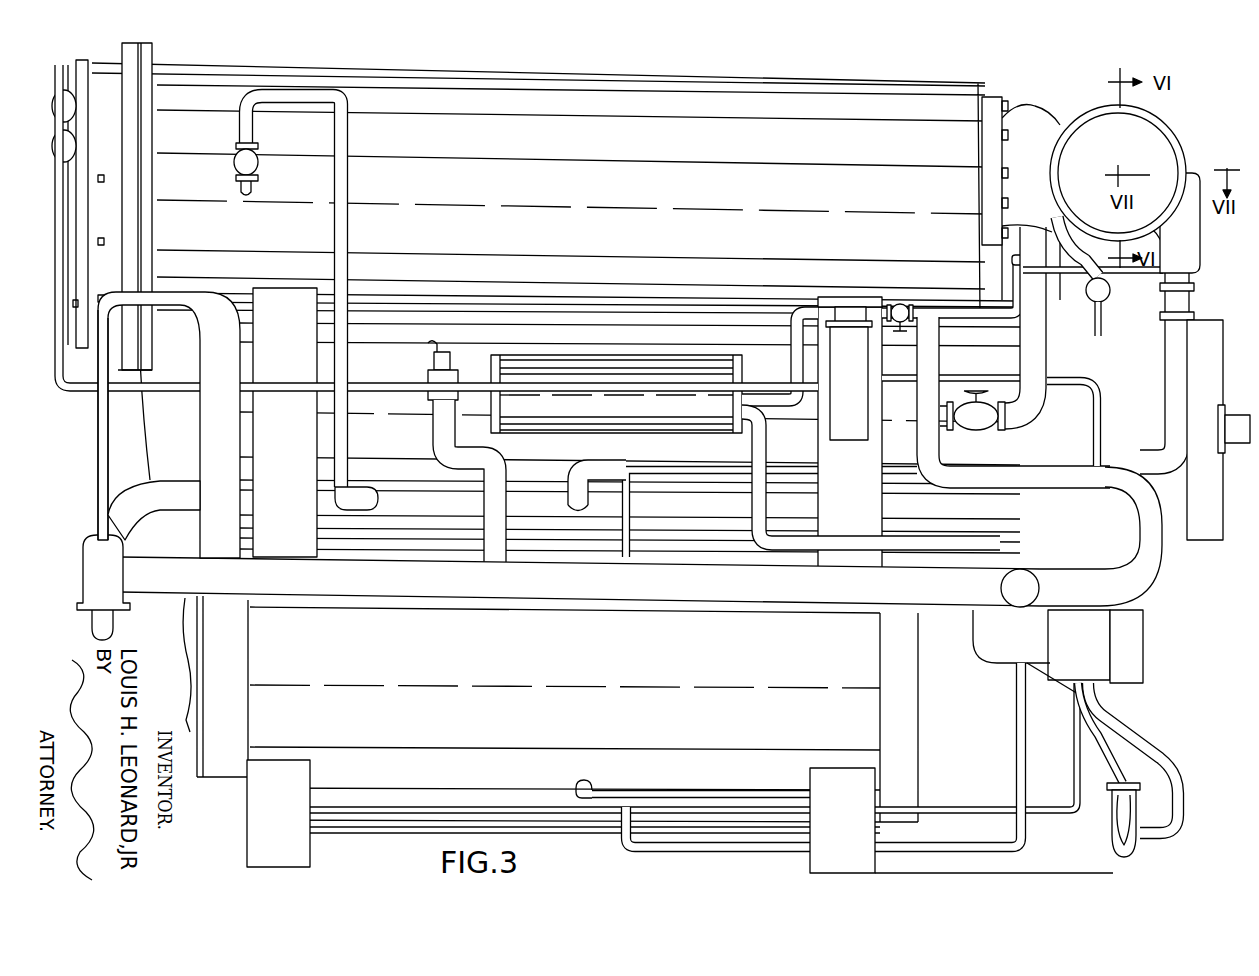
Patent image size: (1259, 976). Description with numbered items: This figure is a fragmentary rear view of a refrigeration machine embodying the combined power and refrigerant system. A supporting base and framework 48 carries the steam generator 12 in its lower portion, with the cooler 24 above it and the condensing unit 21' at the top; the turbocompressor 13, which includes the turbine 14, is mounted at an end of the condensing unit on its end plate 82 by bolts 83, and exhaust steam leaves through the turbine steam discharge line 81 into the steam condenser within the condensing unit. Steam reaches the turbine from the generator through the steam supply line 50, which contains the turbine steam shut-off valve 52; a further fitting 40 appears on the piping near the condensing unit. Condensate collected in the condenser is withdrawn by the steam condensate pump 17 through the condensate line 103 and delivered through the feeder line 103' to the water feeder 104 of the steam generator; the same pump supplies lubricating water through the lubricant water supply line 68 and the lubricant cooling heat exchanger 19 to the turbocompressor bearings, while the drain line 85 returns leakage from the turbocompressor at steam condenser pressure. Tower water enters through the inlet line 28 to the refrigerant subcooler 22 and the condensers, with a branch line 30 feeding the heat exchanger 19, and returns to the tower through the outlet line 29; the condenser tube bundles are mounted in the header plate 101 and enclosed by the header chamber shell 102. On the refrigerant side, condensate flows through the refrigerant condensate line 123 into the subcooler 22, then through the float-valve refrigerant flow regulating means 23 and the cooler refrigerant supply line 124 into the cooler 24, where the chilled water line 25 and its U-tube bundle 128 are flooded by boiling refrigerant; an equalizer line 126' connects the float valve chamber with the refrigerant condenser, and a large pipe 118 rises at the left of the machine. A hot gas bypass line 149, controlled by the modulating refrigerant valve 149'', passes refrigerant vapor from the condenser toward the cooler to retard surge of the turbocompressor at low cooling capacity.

The steam generator 12 is at (519, 734).
The turbocompressor 13 is at (1154, 119).
The turbine 14 is at (1102, 161).
The steam condensate pump 17 is at (1132, 842).
The lubricant cooling heat exchanger 19 is at (618, 406).
The condensing unit 21' is at (538, 188).
The refrigerant subcooler 22 is at (547, 588).
The refrigerant flow regulating means 23 is at (87, 584).
The cooler 24 is at (372, 444).
The chilled water line 25 is at (1237, 443).
The inlet line 28 is at (1000, 590).
The outlet line 29 is at (84, 88).
The branch line 30 is at (356, 390).
The pipe fitting 40 is at (1012, 262).
The supporting base and framework 48 is at (255, 831).
The steam supply line 50 is at (1184, 386).
The turbine steam shut-off valve 52 is at (1191, 304).
The lubricant water supply line 68 is at (1200, 268).
The turbine steam discharge line 81 is at (1048, 137).
The end plate 82 is at (988, 101).
The bolts 83 is at (1009, 205).
The drain line 85 is at (1112, 293).
The header plate 101 is at (150, 252).
The header chamber shell 102 is at (85, 251).
The condensate line 103 is at (859, 755).
The feeder line 103' is at (1128, 758).
The water feeder 104 is at (1062, 651).
The pipe 118 is at (198, 432).
The refrigerant condensate line 123 is at (1037, 477).
The cooler refrigerant supply line 124 is at (157, 497).
The equalizer line 126' is at (71, 425).
The U-tube bundle 128 is at (1199, 447).
The hot gas bypass line 149 is at (324, 303).
The modulating refrigerant valve 149'' is at (270, 169).